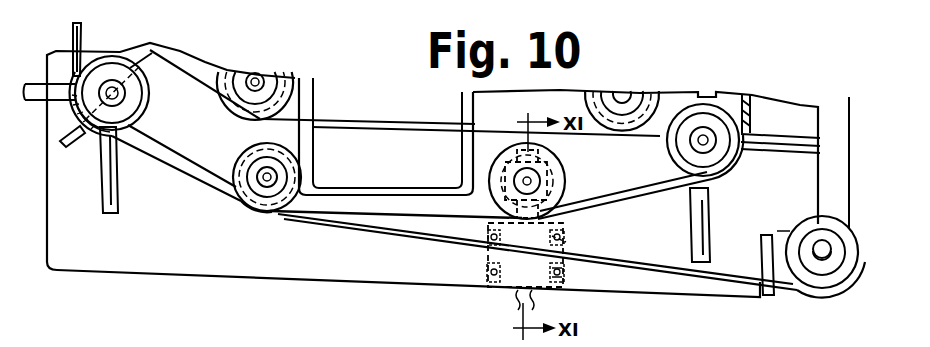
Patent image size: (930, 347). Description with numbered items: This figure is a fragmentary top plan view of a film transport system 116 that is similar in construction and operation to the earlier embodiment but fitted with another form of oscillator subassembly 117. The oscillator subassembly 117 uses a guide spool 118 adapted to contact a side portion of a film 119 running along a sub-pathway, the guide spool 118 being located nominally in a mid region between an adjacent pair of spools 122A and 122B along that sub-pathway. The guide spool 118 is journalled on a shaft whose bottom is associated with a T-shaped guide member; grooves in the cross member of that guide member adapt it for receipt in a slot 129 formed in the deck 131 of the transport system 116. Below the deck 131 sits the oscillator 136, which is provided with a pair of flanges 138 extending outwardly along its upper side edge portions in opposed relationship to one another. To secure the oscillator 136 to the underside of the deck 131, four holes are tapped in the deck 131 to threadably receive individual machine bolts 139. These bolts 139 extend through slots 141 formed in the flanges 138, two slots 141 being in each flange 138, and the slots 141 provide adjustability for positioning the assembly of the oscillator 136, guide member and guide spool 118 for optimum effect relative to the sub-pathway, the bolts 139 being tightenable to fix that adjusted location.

The film transport system 116 is at (324, 92).
The oscillator subassembly 117 is at (497, 152).
The guide spool 118 is at (566, 178).
The film 119 is at (627, 198).
The spool 122A is at (248, 216).
The spool 122B is at (727, 158).
The slot 129 is at (548, 156).
The deck 131 is at (505, 180).
The oscillator 136 is at (502, 288).
The flanges 138 is at (487, 258).
The machine bolts 139 is at (563, 273).
The slots 141 is at (568, 244).